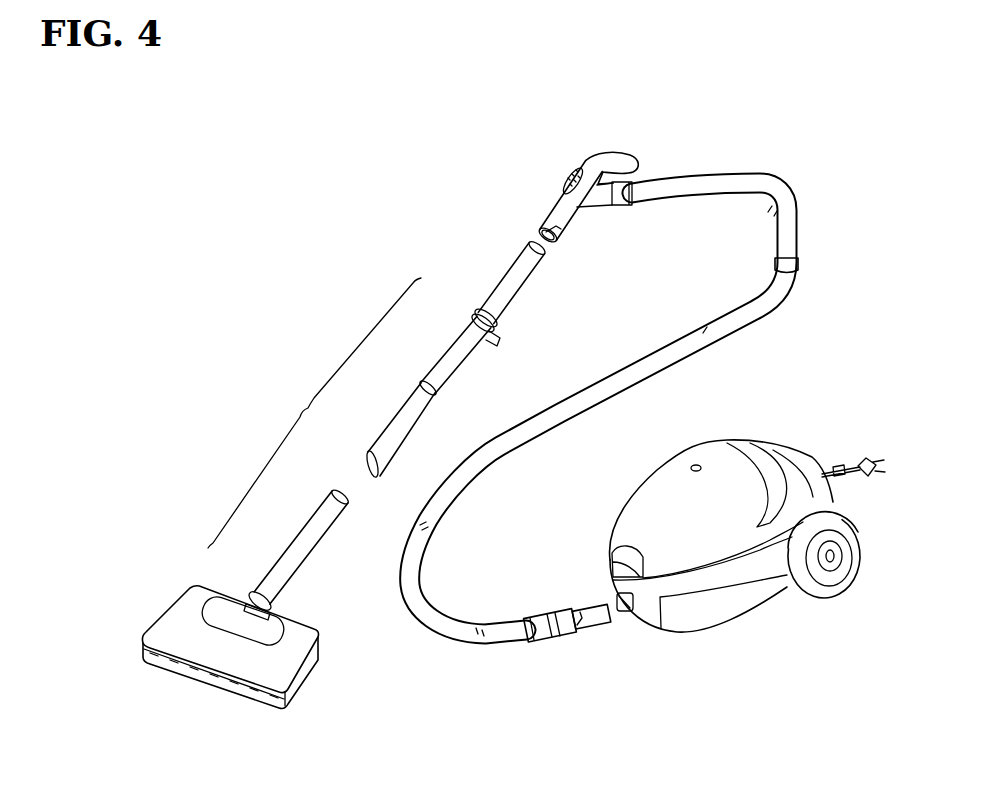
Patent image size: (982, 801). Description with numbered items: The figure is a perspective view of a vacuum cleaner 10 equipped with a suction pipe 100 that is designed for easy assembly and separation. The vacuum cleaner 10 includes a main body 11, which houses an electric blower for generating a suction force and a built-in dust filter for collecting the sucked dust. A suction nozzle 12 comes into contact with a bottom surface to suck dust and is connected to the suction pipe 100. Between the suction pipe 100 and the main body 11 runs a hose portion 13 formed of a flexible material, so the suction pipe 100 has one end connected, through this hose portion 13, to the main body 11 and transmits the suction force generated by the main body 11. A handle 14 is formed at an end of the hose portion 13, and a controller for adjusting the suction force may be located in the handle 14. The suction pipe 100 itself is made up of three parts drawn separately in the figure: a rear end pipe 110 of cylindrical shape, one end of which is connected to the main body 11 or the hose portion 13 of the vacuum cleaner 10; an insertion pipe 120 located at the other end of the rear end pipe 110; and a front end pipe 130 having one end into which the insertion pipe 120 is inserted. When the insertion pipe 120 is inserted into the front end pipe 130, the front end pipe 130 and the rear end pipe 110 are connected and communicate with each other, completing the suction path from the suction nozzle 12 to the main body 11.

The vacuum cleaner 10 is at (197, 116).
The main body 11 is at (735, 477).
The suction nozzle 12 is at (228, 655).
The hose portion 13 is at (566, 410).
The handle 14 is at (567, 183).
The suction pipe 100 is at (377, 429).
The rear end pipe 110 is at (455, 360).
The insertion pipe 120 is at (404, 420).
The front end pipe 130 is at (298, 557).